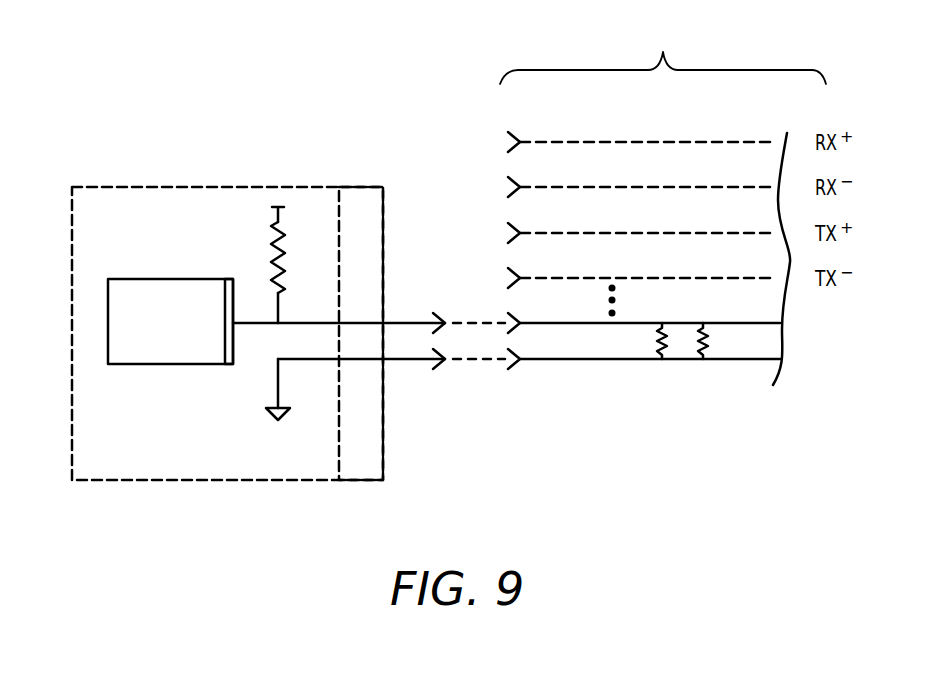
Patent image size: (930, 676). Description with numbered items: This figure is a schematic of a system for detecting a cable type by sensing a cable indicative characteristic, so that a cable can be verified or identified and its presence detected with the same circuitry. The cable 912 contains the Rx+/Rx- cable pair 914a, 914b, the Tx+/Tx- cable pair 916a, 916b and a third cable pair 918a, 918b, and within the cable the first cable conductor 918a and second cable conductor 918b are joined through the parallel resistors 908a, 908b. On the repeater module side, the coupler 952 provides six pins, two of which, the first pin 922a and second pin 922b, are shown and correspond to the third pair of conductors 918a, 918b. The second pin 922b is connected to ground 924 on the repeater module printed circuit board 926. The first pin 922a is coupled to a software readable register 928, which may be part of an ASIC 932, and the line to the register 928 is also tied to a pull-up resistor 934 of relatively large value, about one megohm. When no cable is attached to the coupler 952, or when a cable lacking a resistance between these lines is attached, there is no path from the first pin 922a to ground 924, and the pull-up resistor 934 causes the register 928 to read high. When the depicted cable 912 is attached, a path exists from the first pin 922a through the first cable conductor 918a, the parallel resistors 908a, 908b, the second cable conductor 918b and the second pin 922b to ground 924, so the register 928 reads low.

The repeater module printed circuit board 926 is at (122, 186).
The coupler 952 is at (355, 202).
The ASIC 932 is at (108, 317).
The software readable register 928 is at (230, 279).
The pull-up resistor 934 is at (272, 241).
The ground 924 is at (277, 383).
The first pin 922a is at (360, 323).
The second pin 922b is at (368, 359).
The cable 912 is at (663, 52).
The Rx+ cable conductor 914a is at (632, 141).
The Rx- cable conductor 914b is at (665, 186).
The Tx+ cable conductor 916a is at (610, 235).
The Tx- cable conductor 916b is at (640, 279).
The first cable conductor 918a is at (748, 324).
The second cable conductor 918b is at (748, 360).
The first parallel resistor 908a is at (662, 362).
The second parallel resistor 908b is at (705, 362).